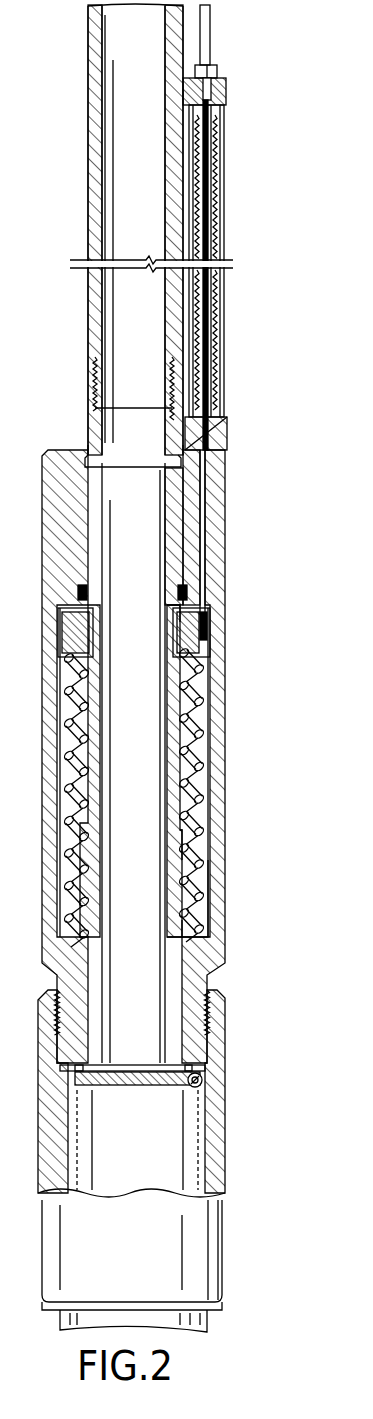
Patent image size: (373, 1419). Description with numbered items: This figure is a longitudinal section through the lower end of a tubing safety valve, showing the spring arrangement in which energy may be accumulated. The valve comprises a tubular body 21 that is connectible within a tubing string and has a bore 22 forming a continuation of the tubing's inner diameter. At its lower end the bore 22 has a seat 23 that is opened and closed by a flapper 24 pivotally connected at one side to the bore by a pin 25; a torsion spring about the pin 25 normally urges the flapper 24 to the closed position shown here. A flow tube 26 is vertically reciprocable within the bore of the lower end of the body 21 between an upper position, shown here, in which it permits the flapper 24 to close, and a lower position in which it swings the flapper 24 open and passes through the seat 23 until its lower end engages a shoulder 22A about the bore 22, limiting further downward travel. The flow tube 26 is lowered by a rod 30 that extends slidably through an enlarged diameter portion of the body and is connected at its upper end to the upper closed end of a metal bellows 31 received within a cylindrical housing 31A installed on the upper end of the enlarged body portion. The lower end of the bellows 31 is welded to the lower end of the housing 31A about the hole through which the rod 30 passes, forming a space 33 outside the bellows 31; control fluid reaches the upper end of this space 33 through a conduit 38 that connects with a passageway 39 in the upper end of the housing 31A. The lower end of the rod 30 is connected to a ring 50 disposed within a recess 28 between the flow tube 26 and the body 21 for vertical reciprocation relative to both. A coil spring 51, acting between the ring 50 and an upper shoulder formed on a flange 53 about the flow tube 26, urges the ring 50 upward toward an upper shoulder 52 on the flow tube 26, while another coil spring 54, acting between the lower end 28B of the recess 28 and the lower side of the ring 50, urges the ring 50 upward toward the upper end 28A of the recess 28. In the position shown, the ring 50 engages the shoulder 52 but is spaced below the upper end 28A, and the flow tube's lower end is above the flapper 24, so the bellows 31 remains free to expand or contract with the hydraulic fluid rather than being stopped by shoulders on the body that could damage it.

The tubular body 21 is at (42, 750).
The bore 22 is at (168, 300).
The shoulder 22A is at (86, 1191).
The seat 23 is at (70, 1079).
The flapper 24 is at (125, 1086).
The pin 25 is at (203, 1080).
The flow tube 26 is at (182, 887).
The recess 28 is at (200, 760).
The upper end of recess 28A is at (178, 618).
The lower end of recess 28B is at (200, 928).
The rod 30 is at (219, 437).
The metal bellows 31 is at (224, 182).
The cylindrical housing 31A is at (224, 292).
The space 33 is at (223, 112).
The conduit 38 is at (212, 36).
The passageway 39 is at (226, 100).
The ring 50 is at (210, 646).
The coil spring 51 is at (200, 724).
The upper shoulder 52 is at (58, 617).
The flange 53 is at (78, 806).
The coil spring 54 is at (205, 838).